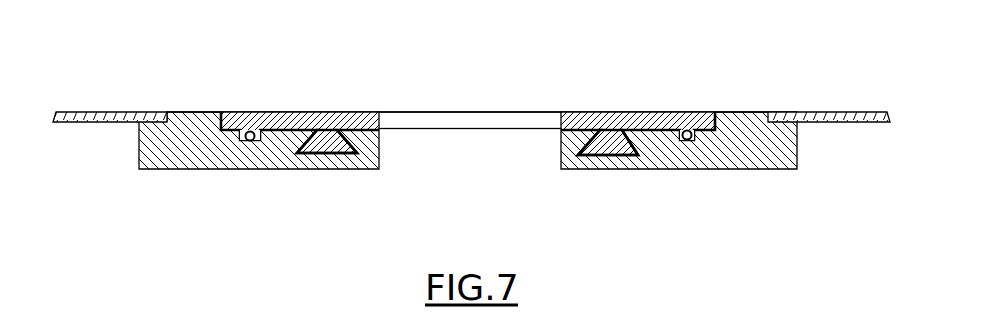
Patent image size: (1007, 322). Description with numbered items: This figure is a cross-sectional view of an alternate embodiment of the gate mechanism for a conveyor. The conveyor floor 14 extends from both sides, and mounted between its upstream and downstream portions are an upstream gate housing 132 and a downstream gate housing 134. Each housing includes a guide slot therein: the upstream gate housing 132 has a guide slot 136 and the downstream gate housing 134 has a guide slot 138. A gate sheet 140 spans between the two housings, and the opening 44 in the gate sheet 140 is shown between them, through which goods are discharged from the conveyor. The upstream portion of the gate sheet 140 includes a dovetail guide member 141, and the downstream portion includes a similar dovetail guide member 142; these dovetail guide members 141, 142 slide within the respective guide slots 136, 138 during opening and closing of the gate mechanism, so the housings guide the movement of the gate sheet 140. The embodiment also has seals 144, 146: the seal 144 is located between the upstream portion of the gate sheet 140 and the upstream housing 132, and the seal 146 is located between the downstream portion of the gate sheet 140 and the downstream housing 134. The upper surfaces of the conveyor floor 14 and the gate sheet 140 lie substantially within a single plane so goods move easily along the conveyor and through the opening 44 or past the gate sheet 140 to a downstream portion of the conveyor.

The conveyor floor 14 is at (123, 112).
The opening 44 is at (445, 113).
The upstream gate housing 132 is at (140, 169).
The downstream gate housing 134 is at (780, 147).
The guide slot 136 is at (368, 170).
The guide slot 138 is at (653, 169).
The gate sheet 140 is at (260, 148).
The dovetail guide member 141 is at (313, 156).
The dovetail guide member 142 is at (597, 157).
The seal 144 is at (244, 141).
The seal 146 is at (645, 139).